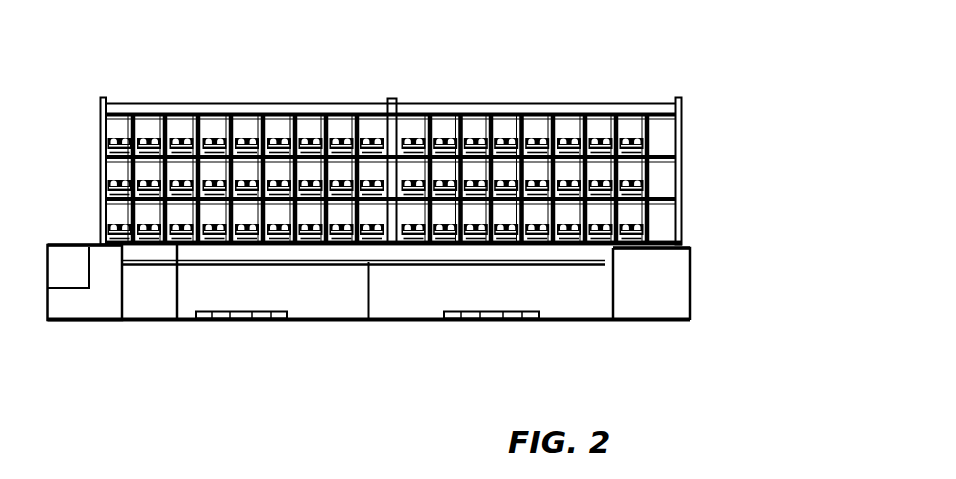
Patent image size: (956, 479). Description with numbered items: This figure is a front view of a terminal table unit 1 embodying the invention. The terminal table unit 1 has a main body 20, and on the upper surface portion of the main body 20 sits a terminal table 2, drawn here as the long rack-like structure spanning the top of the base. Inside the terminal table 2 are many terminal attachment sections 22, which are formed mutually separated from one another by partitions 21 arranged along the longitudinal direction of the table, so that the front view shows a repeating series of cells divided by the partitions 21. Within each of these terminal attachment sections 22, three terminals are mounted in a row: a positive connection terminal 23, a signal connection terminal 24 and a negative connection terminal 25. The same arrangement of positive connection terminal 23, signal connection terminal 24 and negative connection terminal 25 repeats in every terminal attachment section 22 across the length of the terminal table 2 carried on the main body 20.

The terminal table unit 1 is at (694, 101).
The terminal table 2 is at (352, 106).
The main body 20 is at (145, 318).
The partition 21 is at (177, 245).
The terminal attachment section 22 is at (212, 228).
The positive connection terminal 23 is at (212, 228).
The signal connection terminal 24 is at (230, 150).
The negative connection terminal 25 is at (197, 186).